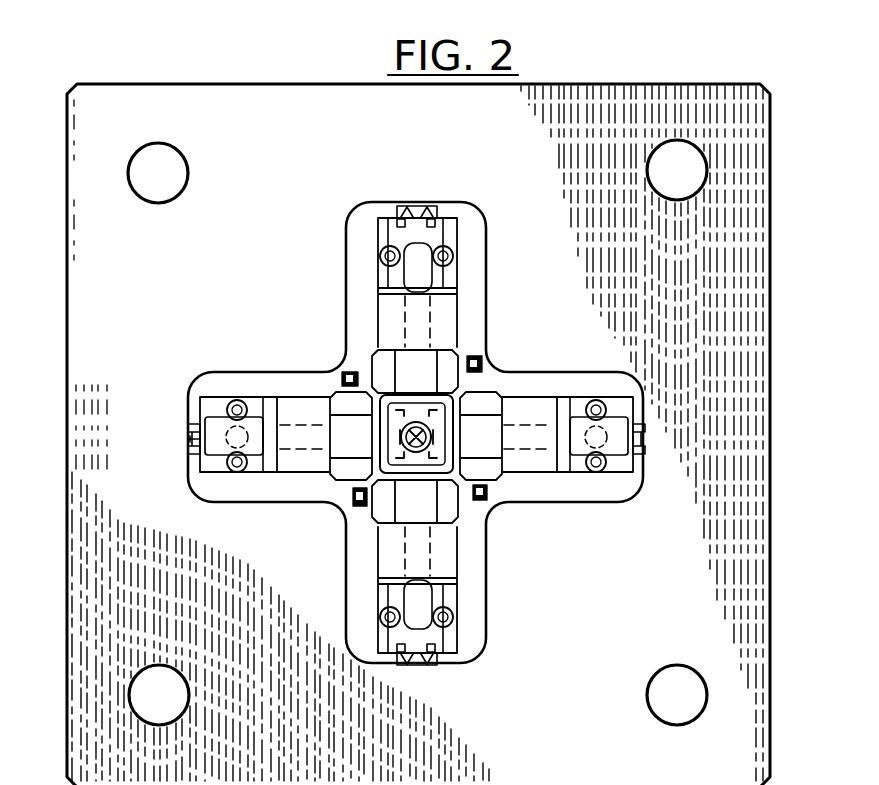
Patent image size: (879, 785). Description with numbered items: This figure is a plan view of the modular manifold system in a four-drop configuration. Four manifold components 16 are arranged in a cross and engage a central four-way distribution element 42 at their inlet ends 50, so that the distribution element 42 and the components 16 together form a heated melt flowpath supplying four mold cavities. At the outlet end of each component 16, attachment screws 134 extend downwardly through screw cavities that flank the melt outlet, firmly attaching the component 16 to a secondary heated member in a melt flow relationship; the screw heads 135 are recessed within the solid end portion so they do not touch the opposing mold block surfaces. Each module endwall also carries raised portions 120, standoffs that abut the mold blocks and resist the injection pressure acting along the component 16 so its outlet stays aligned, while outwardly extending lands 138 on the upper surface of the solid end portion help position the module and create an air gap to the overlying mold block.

The manifold component 16 is at (400, 324).
The four-way distribution element 42 is at (373, 466).
The inlet end 50 is at (376, 400).
The raised portion 120 is at (188, 437).
The module attachment screw 134 is at (451, 250).
The screw head 135 is at (205, 416).
The land 138 is at (397, 286).